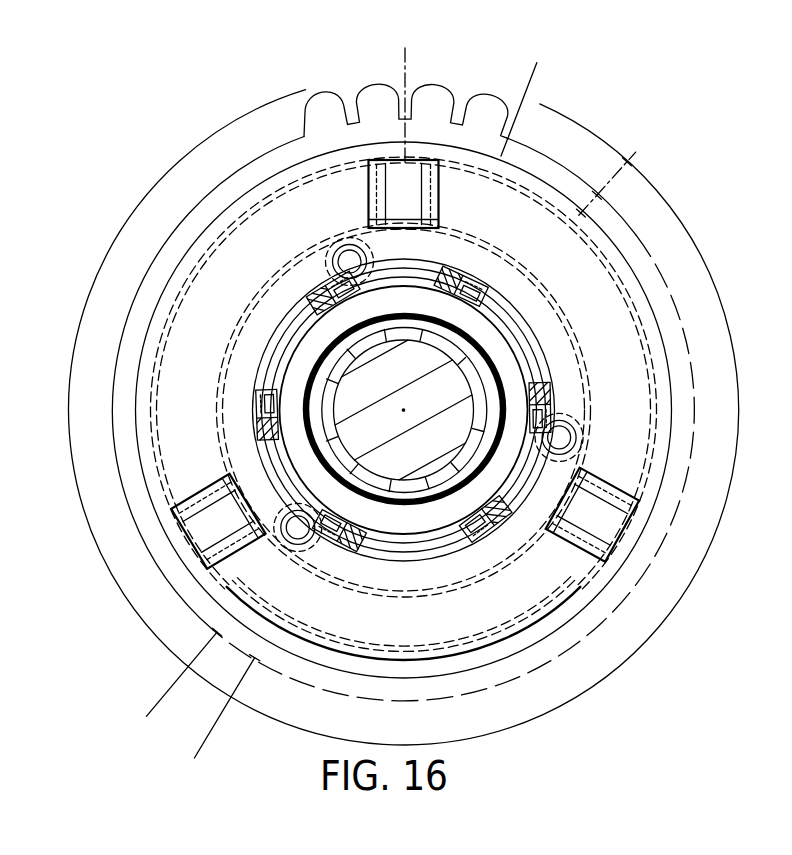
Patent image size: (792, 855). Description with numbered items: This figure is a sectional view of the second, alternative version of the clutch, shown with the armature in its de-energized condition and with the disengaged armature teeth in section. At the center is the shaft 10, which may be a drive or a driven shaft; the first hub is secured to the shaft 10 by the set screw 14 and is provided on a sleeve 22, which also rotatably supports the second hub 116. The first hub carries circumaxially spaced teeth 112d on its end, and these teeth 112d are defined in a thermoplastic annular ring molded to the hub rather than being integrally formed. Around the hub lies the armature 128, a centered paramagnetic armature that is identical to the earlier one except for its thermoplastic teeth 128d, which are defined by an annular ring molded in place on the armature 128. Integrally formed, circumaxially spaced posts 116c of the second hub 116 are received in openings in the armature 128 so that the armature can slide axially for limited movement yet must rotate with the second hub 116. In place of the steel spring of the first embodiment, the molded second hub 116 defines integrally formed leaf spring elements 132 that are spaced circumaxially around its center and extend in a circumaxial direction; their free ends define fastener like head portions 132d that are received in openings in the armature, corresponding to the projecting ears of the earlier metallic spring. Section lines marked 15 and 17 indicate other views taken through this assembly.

The shaft 10 is at (453, 378).
The sleeve 22 is at (478, 318).
The teeth 112d is at (450, 275).
The second hub 116 is at (257, 173).
The posts 116c is at (323, 267).
The armature 128 is at (533, 582).
The teeth 128d is at (460, 302).
The leaf spring elements 132 is at (613, 167).
The fastener like head portions 132d is at (398, 165).
The set screw 14 is at (470, 63).
The section line 15- 15 is at (597, 93).
The section line 17- 17 is at (370, 202).